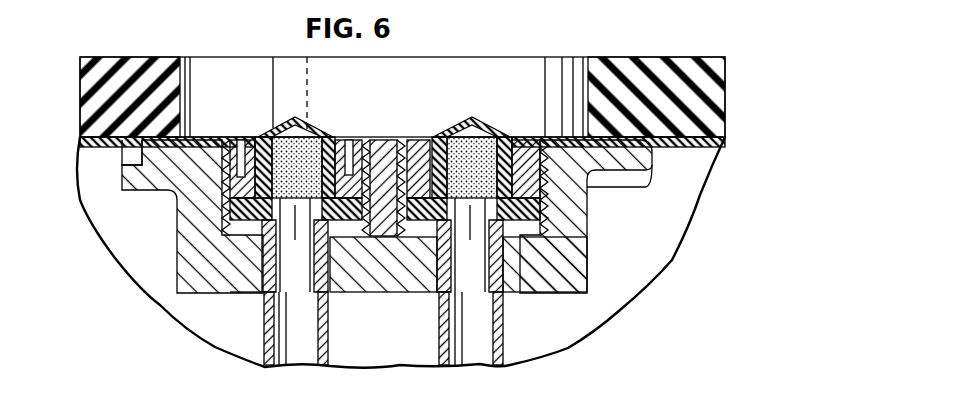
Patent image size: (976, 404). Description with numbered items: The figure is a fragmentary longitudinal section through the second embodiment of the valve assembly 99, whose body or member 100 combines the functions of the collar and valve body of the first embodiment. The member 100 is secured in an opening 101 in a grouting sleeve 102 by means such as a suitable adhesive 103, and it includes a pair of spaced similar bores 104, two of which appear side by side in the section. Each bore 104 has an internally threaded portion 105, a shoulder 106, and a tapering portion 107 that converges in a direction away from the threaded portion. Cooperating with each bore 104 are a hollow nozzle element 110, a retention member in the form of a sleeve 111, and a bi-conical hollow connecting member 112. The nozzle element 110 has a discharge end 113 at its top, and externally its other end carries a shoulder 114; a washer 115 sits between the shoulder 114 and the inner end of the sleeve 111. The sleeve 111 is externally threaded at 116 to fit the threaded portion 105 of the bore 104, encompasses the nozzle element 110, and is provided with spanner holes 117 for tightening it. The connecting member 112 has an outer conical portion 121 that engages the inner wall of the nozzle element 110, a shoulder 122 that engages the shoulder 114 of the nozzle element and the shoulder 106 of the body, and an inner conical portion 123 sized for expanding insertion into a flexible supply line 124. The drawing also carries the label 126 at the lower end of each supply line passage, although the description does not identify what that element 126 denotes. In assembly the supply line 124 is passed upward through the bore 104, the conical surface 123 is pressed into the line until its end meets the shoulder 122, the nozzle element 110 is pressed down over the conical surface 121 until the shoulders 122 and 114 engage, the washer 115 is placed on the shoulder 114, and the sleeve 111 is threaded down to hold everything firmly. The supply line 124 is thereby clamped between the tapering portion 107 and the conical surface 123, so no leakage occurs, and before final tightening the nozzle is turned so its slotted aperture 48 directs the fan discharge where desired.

The slotted aperture 48 is at (306, 126).
The valve assembly 99 is at (602, 223).
The body or member 100 is at (188, 112).
The opening 101 is at (192, 62).
The grouting sleeve 102 is at (670, 73).
The adhesive 103 is at (122, 150).
The bore 104 is at (368, 238).
The internally threaded portion 105 is at (237, 222).
The shoulder 106 is at (253, 310).
The tapering portion 107 is at (272, 266).
The hollow nozzle element 110 is at (262, 128).
The sleeve 111 is at (208, 137).
The bi-conical hollow connecting member 112 is at (279, 262).
The discharge end 113 is at (283, 130).
The shoulder 114 is at (235, 222).
The washer 115 is at (243, 203).
The external threads 116 is at (232, 157).
The spanner holes 117 is at (240, 140).
The outer conical portion 121 is at (384, 167).
The shoulder 122 is at (250, 235).
The inner conical portion 123 is at (402, 236).
The supply line 124 is at (276, 362).
The pipe 126 is at (383, 328).